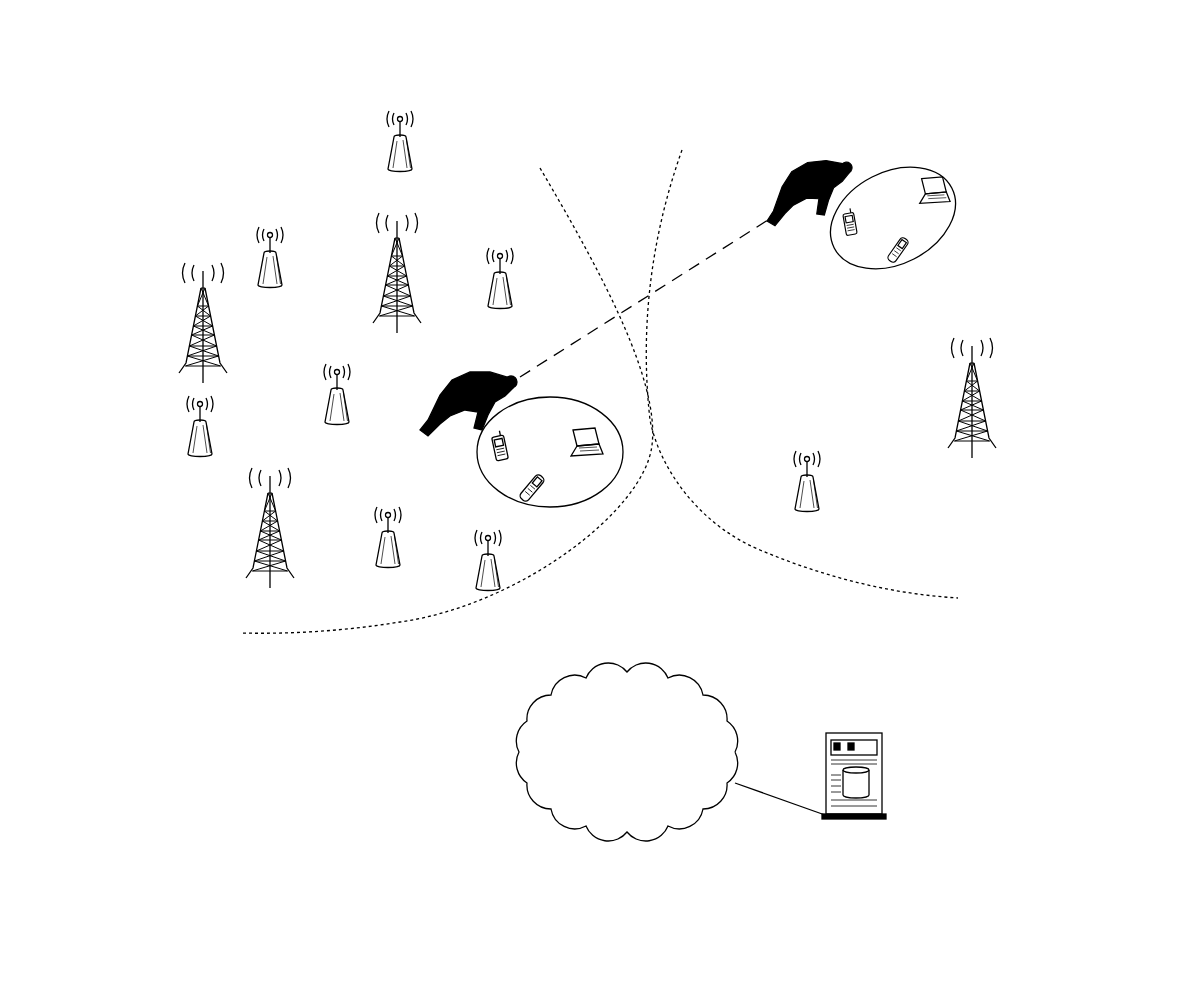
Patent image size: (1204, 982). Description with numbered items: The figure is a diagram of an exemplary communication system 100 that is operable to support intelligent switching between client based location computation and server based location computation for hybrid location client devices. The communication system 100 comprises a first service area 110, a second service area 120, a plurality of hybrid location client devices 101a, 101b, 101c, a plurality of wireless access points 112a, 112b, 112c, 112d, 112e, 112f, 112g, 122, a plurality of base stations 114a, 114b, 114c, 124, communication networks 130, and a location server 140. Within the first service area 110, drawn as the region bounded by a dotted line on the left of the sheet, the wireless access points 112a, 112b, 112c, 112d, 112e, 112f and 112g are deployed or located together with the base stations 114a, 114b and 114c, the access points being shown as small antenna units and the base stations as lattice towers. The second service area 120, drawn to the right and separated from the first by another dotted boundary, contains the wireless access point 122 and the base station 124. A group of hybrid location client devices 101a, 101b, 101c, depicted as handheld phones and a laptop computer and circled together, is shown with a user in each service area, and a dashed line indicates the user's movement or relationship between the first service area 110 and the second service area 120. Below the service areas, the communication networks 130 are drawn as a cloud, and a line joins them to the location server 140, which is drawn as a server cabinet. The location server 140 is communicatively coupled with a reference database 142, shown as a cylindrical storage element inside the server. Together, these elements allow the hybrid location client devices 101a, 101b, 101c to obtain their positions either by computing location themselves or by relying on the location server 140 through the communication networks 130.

The communication system 100 is at (1077, 121).
The first service area 110 is at (417, 633).
The second service area 120 is at (912, 597).
The wireless access point 112a is at (524, 294).
The wireless access point 112b is at (417, 161).
The wireless access point 112c is at (288, 279).
The wireless access point 112d is at (355, 401).
The wireless access point 112e is at (213, 436).
The wireless access point 112f is at (508, 584).
The wireless access point 112g is at (407, 553).
The base station 114a is at (427, 275).
The base station 114b is at (309, 525).
The base station 114c is at (244, 325).
The wireless access point 122 is at (826, 498).
The base station 124 is at (991, 413).
The hybrid location client device 101a is at (508, 456).
The hybrid location client device 101b is at (560, 470).
The hybrid location client device 101c is at (568, 436).
The communication networks 130 is at (660, 669).
The location server 140 is at (871, 785).
The reference database 142 is at (869, 783).